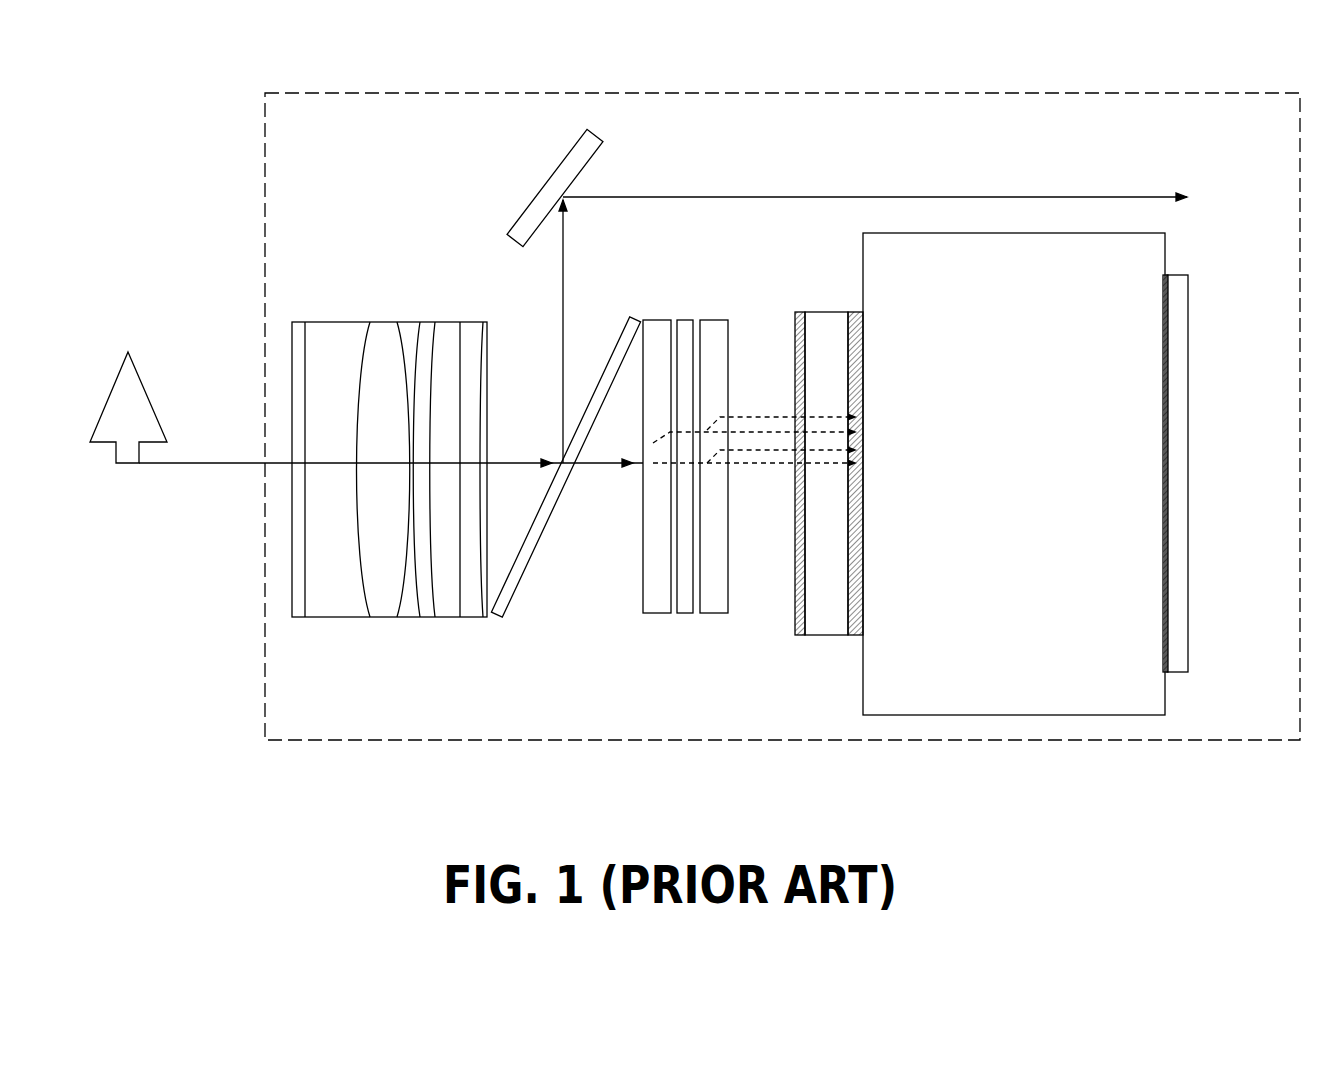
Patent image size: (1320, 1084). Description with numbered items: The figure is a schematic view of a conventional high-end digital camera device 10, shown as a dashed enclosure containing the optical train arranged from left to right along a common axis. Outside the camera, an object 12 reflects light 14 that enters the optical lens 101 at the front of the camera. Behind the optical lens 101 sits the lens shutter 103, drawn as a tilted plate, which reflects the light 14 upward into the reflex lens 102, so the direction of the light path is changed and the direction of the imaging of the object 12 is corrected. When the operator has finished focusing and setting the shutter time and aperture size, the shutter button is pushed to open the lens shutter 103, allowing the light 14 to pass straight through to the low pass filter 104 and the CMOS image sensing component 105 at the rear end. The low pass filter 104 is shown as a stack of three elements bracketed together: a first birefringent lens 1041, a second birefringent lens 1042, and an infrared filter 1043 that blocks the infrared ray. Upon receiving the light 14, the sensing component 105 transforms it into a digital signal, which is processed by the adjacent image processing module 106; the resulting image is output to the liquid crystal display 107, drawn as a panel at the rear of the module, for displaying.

The high-end digital camera device 10 is at (265, 673).
The object 12 is at (110, 393).
The light 14 is at (213, 463).
The optical lens 101 is at (342, 617).
The reflex lens 102 is at (550, 175).
The lens shutter 103 is at (517, 590).
The low pass filter 104 is at (730, 306).
The first birefringent lens 1041 is at (643, 585).
The second birefringent lens 1042 is at (730, 565).
The infrared filter 1043 is at (683, 613).
The CMOS image sensing component 105 is at (825, 310).
The image processing module 106 is at (1005, 715).
The liquid crystal display 107 is at (1190, 467).